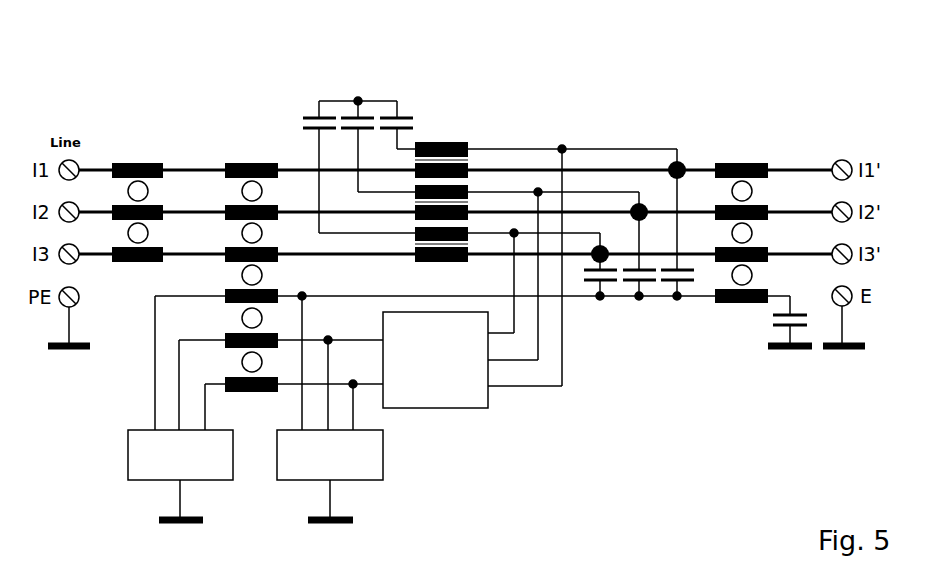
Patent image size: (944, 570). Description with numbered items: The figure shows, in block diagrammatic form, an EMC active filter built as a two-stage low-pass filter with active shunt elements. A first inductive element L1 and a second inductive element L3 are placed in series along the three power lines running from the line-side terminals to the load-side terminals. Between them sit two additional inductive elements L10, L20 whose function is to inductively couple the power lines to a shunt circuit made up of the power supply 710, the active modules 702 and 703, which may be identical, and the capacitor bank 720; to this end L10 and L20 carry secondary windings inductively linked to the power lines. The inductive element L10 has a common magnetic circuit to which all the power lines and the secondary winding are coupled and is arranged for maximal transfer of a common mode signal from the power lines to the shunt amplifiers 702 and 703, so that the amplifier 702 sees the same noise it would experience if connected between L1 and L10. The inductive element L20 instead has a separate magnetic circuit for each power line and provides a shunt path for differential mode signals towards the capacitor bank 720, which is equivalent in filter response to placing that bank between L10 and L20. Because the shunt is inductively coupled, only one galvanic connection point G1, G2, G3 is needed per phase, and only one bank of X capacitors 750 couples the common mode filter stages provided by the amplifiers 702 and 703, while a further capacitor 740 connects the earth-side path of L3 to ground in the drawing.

The first inductive element L1 is at (138, 162).
The additional inductive element L10 is at (246, 162).
The additional inductive element L20 is at (457, 142).
The second inductive element L3 is at (747, 162).
The capacitor bank 720 is at (365, 99).
The bank of X capacitors 750 is at (655, 286).
The earth capacitor 740 is at (773, 328).
The power supply 710 is at (475, 397).
The active module 702 is at (149, 472).
The active module 703 is at (368, 474).
The galvanic connection point G1 is at (682, 163).
The galvanic connection point G2 is at (643, 204).
The galvanic connection point G3 is at (603, 246).